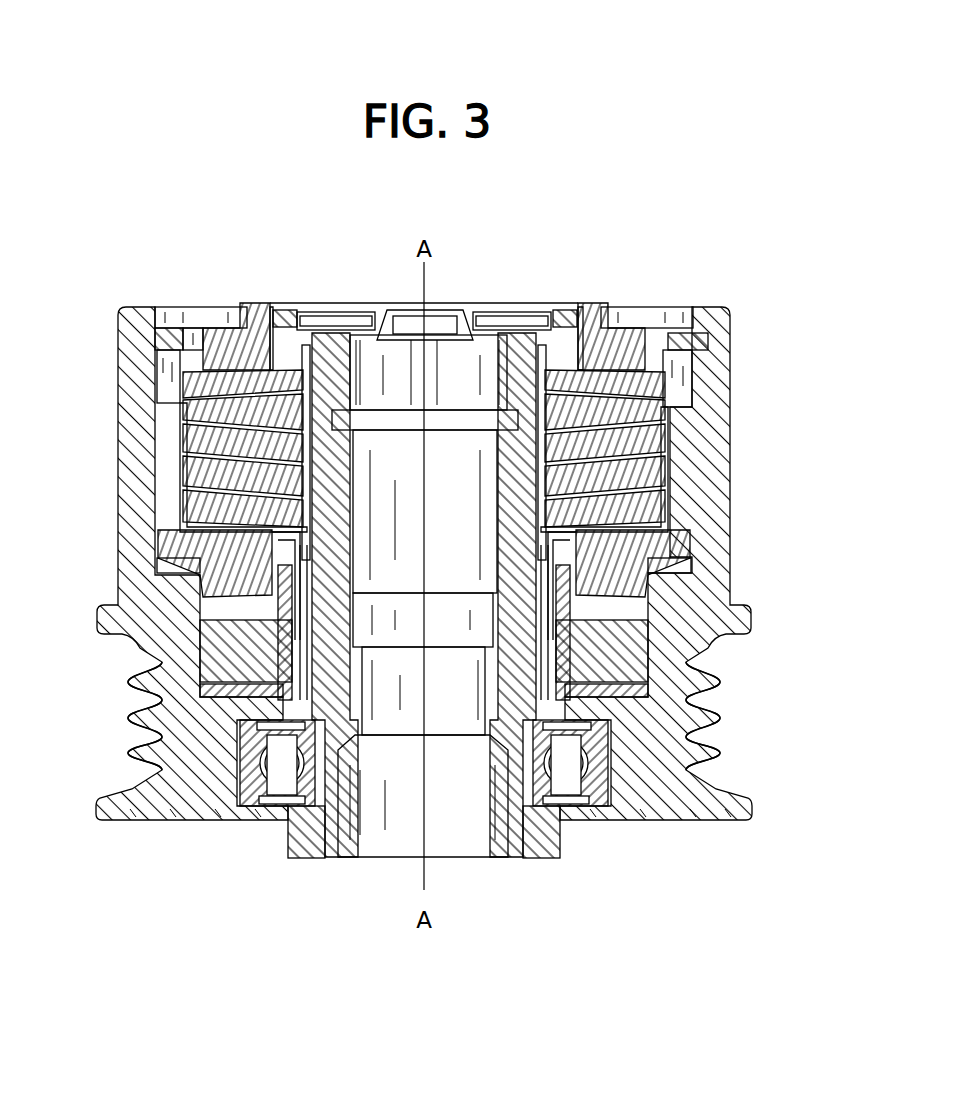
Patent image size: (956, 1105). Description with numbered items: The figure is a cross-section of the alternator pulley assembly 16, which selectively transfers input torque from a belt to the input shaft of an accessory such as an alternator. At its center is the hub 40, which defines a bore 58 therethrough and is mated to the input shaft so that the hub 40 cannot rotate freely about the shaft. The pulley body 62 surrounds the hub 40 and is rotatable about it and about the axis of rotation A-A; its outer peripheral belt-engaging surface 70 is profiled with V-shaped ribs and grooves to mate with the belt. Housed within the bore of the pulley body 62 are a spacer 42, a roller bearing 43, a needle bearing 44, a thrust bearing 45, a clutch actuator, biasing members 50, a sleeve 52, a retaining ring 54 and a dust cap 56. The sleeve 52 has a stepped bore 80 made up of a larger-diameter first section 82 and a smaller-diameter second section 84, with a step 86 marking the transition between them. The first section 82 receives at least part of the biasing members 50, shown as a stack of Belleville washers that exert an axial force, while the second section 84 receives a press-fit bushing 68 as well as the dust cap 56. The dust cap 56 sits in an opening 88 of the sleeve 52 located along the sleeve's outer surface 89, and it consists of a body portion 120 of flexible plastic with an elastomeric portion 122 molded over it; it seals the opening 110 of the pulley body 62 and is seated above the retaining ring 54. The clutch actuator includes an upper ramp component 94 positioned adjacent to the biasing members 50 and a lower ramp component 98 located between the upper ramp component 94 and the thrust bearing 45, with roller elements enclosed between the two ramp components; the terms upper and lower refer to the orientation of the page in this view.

The alternator pulley assembly 16 is at (602, 234).
The hub 40 is at (527, 340).
The spacer 42 is at (310, 857).
The roller bearing 43 is at (233, 790).
The needle bearing 44 is at (583, 597).
The thrust bearing 45 is at (605, 740).
The biasing members 50 is at (660, 393).
The sleeve 52 is at (243, 332).
The retaining ring 54 is at (700, 343).
The dust cap 56 is at (478, 307).
The bore 58 is at (443, 507).
The pulley body 62 is at (720, 416).
The bushing 68 is at (573, 343).
The belt-engaging surface 70 is at (707, 672).
The bore 80 is at (315, 340).
The first section 82 is at (222, 352).
The second section 84 is at (292, 308).
The step 86 is at (283, 340).
The opening 88 is at (583, 307).
The outer surface 89 is at (597, 300).
The upper ramp component 94 is at (637, 582).
The lower ramp component 98 is at (623, 660).
The opening 110 is at (680, 310).
The body portion 120 is at (365, 307).
The elastomeric portion 122 is at (283, 307).